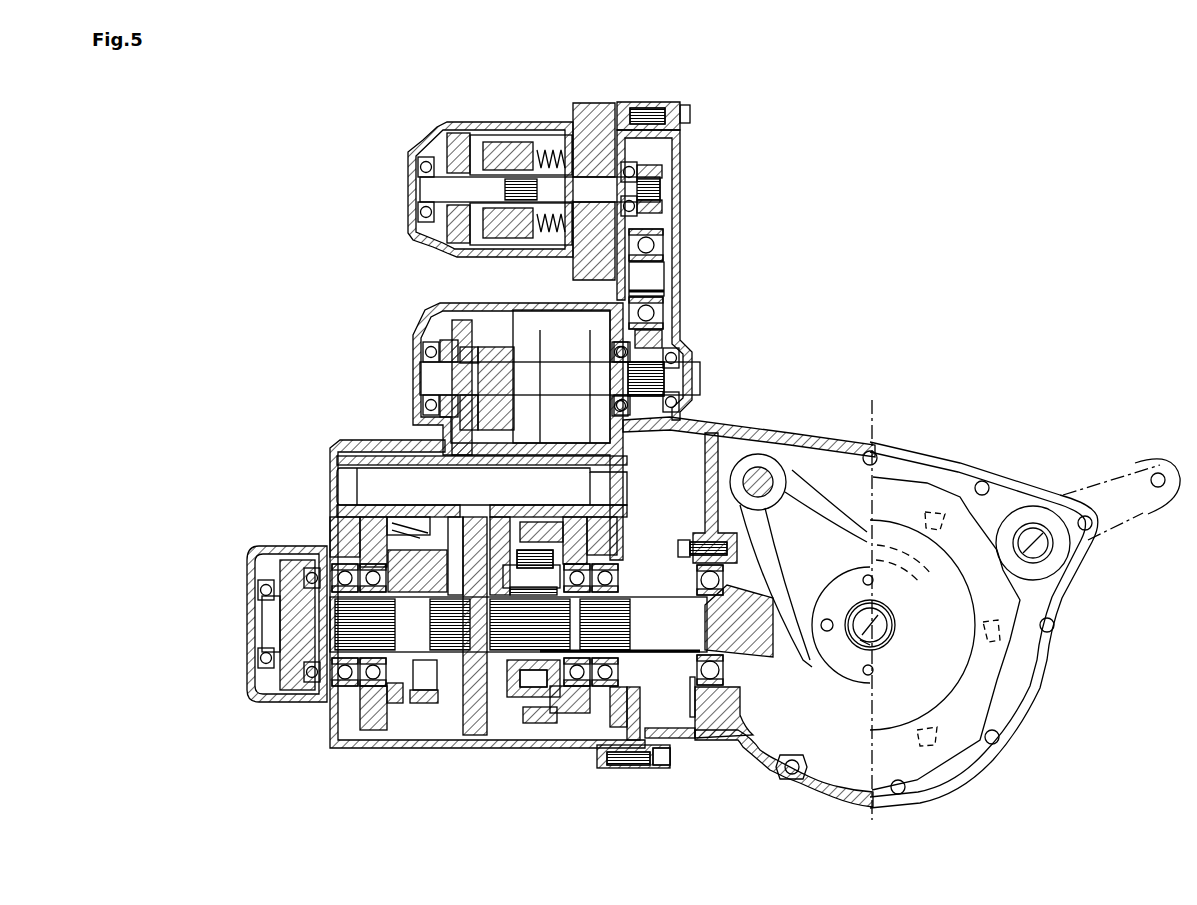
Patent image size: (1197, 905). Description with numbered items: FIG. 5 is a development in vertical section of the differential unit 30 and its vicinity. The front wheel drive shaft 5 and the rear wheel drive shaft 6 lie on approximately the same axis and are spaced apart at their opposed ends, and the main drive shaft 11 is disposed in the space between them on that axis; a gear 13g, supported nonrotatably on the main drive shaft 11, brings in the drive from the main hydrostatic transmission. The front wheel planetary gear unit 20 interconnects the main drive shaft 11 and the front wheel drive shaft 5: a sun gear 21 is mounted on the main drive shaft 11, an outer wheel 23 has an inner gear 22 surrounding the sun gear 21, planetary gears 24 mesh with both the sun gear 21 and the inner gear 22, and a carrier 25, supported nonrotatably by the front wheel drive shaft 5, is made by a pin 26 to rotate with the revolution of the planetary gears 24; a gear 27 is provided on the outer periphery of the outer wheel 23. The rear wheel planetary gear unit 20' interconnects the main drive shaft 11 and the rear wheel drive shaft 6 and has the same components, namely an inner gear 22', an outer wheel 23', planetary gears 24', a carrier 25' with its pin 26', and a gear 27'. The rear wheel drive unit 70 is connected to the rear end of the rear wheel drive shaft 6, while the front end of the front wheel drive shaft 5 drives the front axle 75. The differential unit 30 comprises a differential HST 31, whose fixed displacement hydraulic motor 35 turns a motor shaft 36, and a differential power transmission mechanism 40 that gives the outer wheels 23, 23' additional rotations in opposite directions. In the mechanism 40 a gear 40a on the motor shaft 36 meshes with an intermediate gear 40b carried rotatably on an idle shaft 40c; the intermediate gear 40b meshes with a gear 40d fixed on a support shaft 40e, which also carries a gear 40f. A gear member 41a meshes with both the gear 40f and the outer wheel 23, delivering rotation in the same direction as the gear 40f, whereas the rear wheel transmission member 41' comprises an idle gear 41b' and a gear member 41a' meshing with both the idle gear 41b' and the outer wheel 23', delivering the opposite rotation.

The front wheel drive shaft 5 is at (650, 652).
The rear wheel drive shaft 6 is at (282, 700).
The main drive shaft 11 is at (465, 655).
The gear 13g is at (443, 500).
The front wheel planetary gear unit 20 is at (633, 781).
The rear wheel planetary gear unit 20' is at (506, 626).
The sun gear 21 is at (505, 655).
The inner gear 22 is at (533, 658).
The clutch hub 22' is at (345, 510).
The outer wheel 23 is at (550, 760).
The outer wheel 23' is at (349, 534).
The planetary gears 24 is at (749, 590).
The planetary gears 24' is at (412, 737).
The carrier 25 is at (555, 670).
The carrier 25' is at (323, 594).
The pin 26 is at (870, 596).
The cover plate 26' is at (434, 729).
The gear 27 is at (610, 755).
The gear 27' is at (337, 736).
The differential unit 30 is at (316, 182).
The differential HST 31 is at (352, 70).
The hydraulic motor 35 is at (440, 126).
The motor shaft 36 is at (586, 188).
The differential power transmission mechanism 40 is at (772, 206).
The gear 40a is at (658, 172).
The intermediate gear 40b is at (653, 230).
The idle shaft 40c is at (647, 276).
The gear 40d is at (655, 352).
The support shaft 40e is at (674, 384).
The gear 40f is at (498, 340).
The gear member 41a is at (571, 364).
The gear member 41a' is at (409, 393).
The idle gear 41b' is at (434, 359).
The rear wheel transmission member 41' is at (494, 408).
The rear wheel drive unit 70 is at (238, 602).
The front axle 75 is at (882, 632).